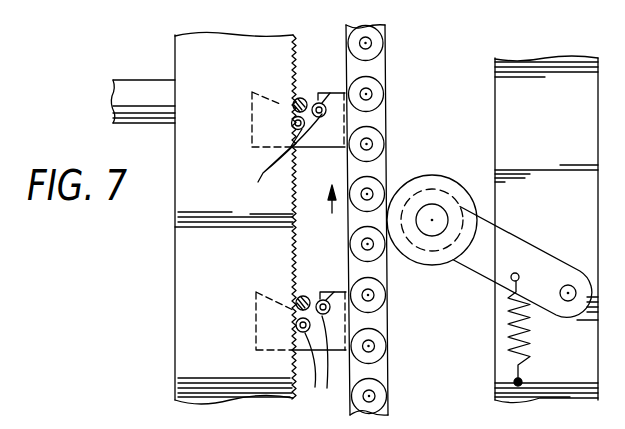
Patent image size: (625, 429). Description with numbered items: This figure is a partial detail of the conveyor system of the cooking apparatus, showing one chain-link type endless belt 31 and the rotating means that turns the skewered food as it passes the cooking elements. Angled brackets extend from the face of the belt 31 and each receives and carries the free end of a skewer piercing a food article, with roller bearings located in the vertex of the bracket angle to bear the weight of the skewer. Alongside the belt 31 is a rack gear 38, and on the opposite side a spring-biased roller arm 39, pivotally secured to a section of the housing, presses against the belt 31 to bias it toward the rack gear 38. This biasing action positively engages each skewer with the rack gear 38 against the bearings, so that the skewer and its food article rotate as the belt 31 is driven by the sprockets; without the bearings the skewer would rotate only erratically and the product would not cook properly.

The endless belt 31 is at (379, 141).
The rack gear 38 is at (194, 346).
The spring-biased roller arm 39 is at (455, 192).